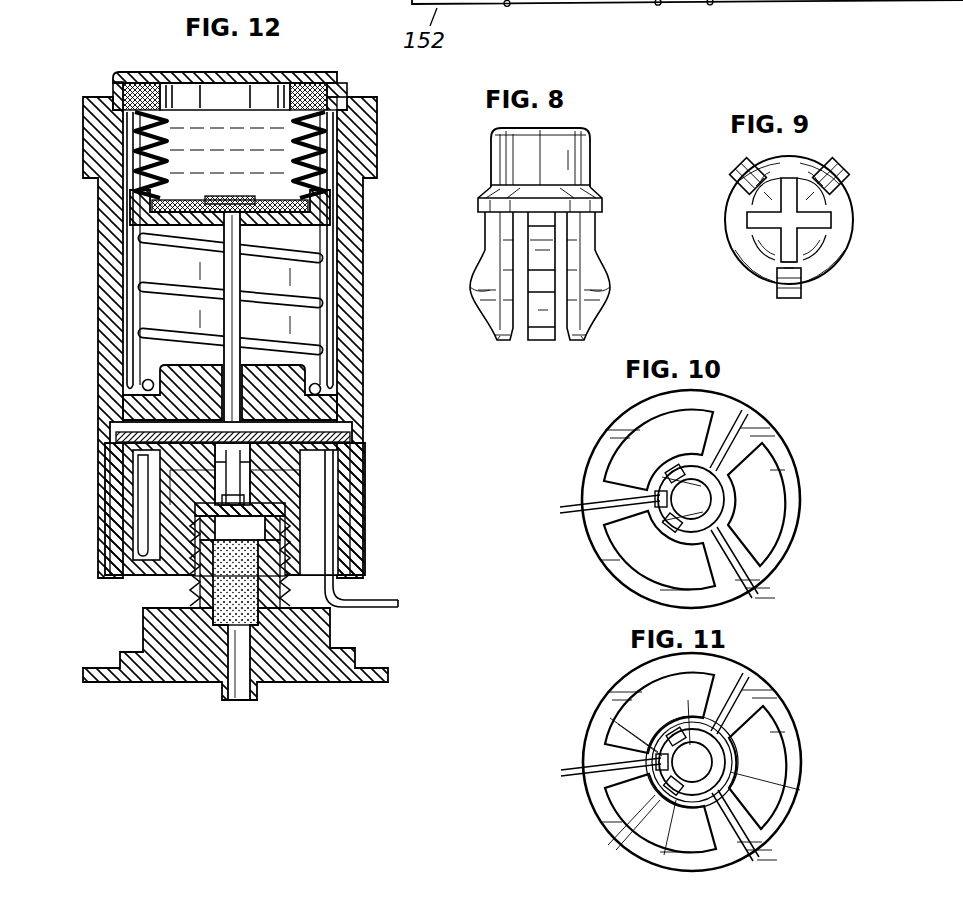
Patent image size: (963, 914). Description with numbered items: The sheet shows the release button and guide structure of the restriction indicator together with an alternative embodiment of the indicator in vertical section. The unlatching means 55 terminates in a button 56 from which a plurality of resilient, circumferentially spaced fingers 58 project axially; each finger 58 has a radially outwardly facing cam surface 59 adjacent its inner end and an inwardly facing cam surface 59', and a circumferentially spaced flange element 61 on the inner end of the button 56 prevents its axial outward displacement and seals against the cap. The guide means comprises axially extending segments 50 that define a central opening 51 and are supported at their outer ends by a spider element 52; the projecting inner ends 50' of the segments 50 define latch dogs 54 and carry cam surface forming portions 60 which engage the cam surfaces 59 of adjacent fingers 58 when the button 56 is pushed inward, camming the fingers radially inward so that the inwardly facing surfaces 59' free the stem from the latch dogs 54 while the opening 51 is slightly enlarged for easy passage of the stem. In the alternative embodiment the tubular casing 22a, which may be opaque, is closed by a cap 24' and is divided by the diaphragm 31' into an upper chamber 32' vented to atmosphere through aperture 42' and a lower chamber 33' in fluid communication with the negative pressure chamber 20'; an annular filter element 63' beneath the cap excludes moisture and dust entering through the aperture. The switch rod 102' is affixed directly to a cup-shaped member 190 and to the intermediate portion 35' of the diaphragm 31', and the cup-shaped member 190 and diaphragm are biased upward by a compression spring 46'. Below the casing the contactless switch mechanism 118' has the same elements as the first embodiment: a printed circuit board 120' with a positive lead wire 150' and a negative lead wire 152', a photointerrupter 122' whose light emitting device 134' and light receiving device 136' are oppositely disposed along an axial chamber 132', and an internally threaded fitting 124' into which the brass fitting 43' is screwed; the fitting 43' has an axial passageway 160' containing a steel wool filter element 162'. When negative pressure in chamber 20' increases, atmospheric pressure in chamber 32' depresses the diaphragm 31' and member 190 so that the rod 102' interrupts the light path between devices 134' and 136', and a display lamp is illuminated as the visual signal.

In FIG. 12, the tubular casing 22a is at (96, 288).
In FIG. 12, the cap 24' is at (179, 78).
In FIG. 12, the aperture 42' is at (358, 82).
In FIG. 12, the annular filter element 63' is at (233, 72).
In FIG. 12, the upper chamber 32' is at (225, 108).
In FIG. 12, the lower chamber 33' is at (184, 253).
In FIG. 12, the compression spring 46' is at (274, 248).
In FIG. 12, the diaphragm 31' is at (277, 155).
In FIG. 12, the cup-shaped member 190 is at (331, 222).
In FIG. 12, the intermediate portion of diaphragm 35' is at (230, 187).
In FIG. 12, the switch rod 102' is at (202, 358).
In FIG. 12, the fitting 124' is at (266, 470).
In FIG. 12, the photointerrupter 122' is at (299, 497).
In FIG. 12, the printed circuit board 120' is at (276, 437).
In FIG. 12, the light receiving device 136' is at (321, 474).
In FIG. 12, the chamber 132' is at (145, 477).
In FIG. 12, the light emitting device 134' is at (144, 498).
In FIG. 12, the negative lead wire 152' is at (94, 514).
In FIG. 12, the axial passageway 160' is at (261, 555).
In FIG. 12, the filter element 162' is at (199, 582).
In FIG. 12, the positive lead wire 150' is at (386, 528).
In FIG. 12, the fitting 43' is at (216, 654).
In FIG. 12, the contactless switch mechanism 118' is at (90, 619).
In FIG. 12, the negative pressure chamber 20' is at (196, 706).
In FIG. 8, the button 56 is at (586, 130).
In FIG. 8, the unlatching means 55 is at (596, 150).
In FIG. 9, the unlatching means 55 is at (827, 163).
In FIG. 8, the flange element 61 is at (480, 213).
In FIG. 9, the flange element 61 is at (756, 277).
In FIG. 8, the fingers 58 is at (497, 306).
In FIG. 9, the fingers 58 is at (842, 194).
In FIG. 8, the cam surface 59 is at (539, 323).
In FIG. 9, the cam surface 59 is at (786, 243).
In FIG. 8, the inwardly facing cam surface 59' is at (510, 354).
In FIG. 9, the inwardly facing cam surface 59' is at (794, 247).
In FIG. 10, the spider element 52 is at (792, 448).
In FIG. 11, the spider element 52 is at (794, 708).
In FIG. 10, the cam surface forming portions 60 is at (654, 498).
In FIG. 11, the cam surface forming portions 60 is at (660, 765).
In FIG. 10, the central opening 51 is at (705, 499).
In FIG. 11, the central opening 51 is at (706, 762).
In FIG. 10, the segments 50 is at (704, 498).
In FIG. 11, the segments 50 is at (694, 760).
In FIG. 11, the inner ends of segments 50' is at (622, 786).
In FIG. 10, the latch dogs 54 is at (677, 477).
In FIG. 11, the latch dogs 54 is at (690, 730).